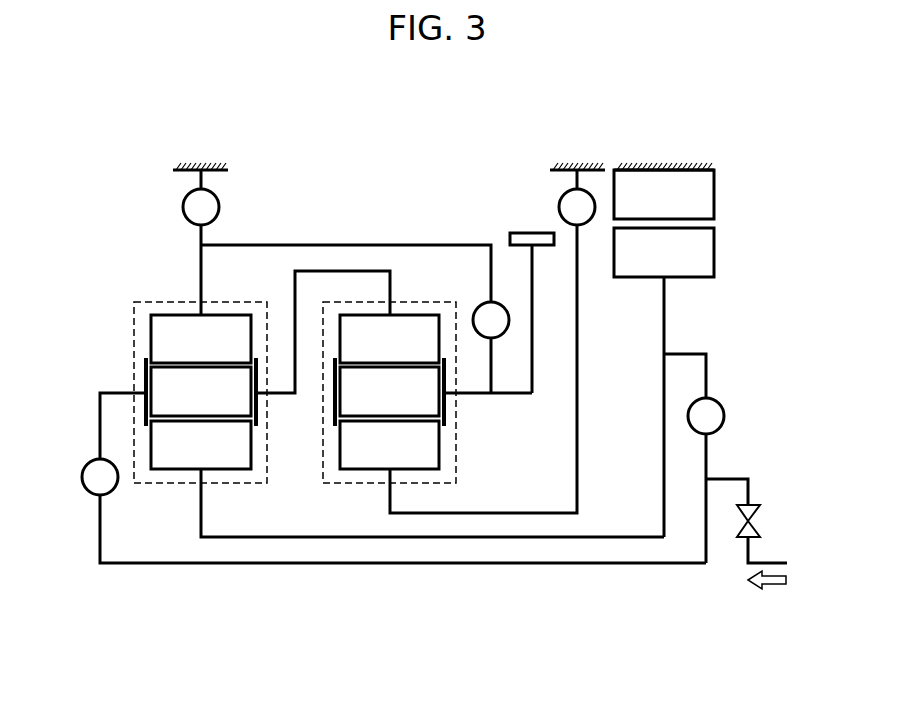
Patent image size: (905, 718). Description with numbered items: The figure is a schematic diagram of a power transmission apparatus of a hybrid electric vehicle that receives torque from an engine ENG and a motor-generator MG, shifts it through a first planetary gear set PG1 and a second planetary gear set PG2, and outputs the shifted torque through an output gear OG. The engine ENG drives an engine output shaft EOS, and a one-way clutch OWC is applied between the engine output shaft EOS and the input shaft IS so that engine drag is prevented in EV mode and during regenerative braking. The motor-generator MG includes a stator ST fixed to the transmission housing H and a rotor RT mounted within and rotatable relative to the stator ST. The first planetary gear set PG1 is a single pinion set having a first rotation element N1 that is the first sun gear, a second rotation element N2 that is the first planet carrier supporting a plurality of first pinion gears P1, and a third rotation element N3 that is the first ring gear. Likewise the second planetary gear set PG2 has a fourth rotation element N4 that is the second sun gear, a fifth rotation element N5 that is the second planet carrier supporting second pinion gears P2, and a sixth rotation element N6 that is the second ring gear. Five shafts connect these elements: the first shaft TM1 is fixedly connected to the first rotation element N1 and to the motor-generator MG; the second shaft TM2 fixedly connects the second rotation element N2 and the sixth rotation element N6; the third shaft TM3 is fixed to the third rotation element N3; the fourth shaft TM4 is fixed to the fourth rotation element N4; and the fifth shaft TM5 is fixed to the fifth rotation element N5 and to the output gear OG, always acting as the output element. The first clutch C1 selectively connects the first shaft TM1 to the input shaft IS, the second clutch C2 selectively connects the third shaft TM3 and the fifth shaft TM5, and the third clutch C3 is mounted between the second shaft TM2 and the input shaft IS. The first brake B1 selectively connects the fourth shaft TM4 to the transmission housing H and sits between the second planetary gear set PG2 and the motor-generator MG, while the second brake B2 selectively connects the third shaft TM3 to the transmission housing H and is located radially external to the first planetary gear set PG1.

The transmission housing H is at (201, 169).
The second brake B2 is at (201, 242).
The first brake B1 is at (577, 197).
The first clutch C1 is at (694, 420).
The second clutch C2 is at (491, 347).
The third clutch C3 is at (114, 444).
The first shaft TM1 is at (434, 539).
The second shaft TM2 is at (343, 271).
The third shaft TM3 is at (433, 245).
The fourth shaft TM4 is at (503, 515).
The fifth shaft TM5 is at (536, 395).
The output gear OG is at (532, 232).
The motor-generator MG is at (685, 223).
The stator ST is at (664, 194).
The rotor RT is at (664, 252).
The input shaft IS is at (593, 564).
The one-way clutch OWC is at (753, 500).
The engine output shaft EOS is at (778, 560).
The engine ENG is at (767, 595).
The first planetary gear set PG1 is at (176, 475).
The second planetary gear set PG2 is at (413, 475).
The first rotation element N1 is at (201, 445).
The second rotation element N2 is at (144, 360).
The third rotation element N3 is at (201, 339).
The fourth rotation element N4 is at (389, 445).
The fifth rotation element N5 is at (446, 410).
The sixth rotation element N6 is at (389, 339).
The first pinion gears P1 is at (201, 391).
The second pinion gears P2 is at (389, 391).